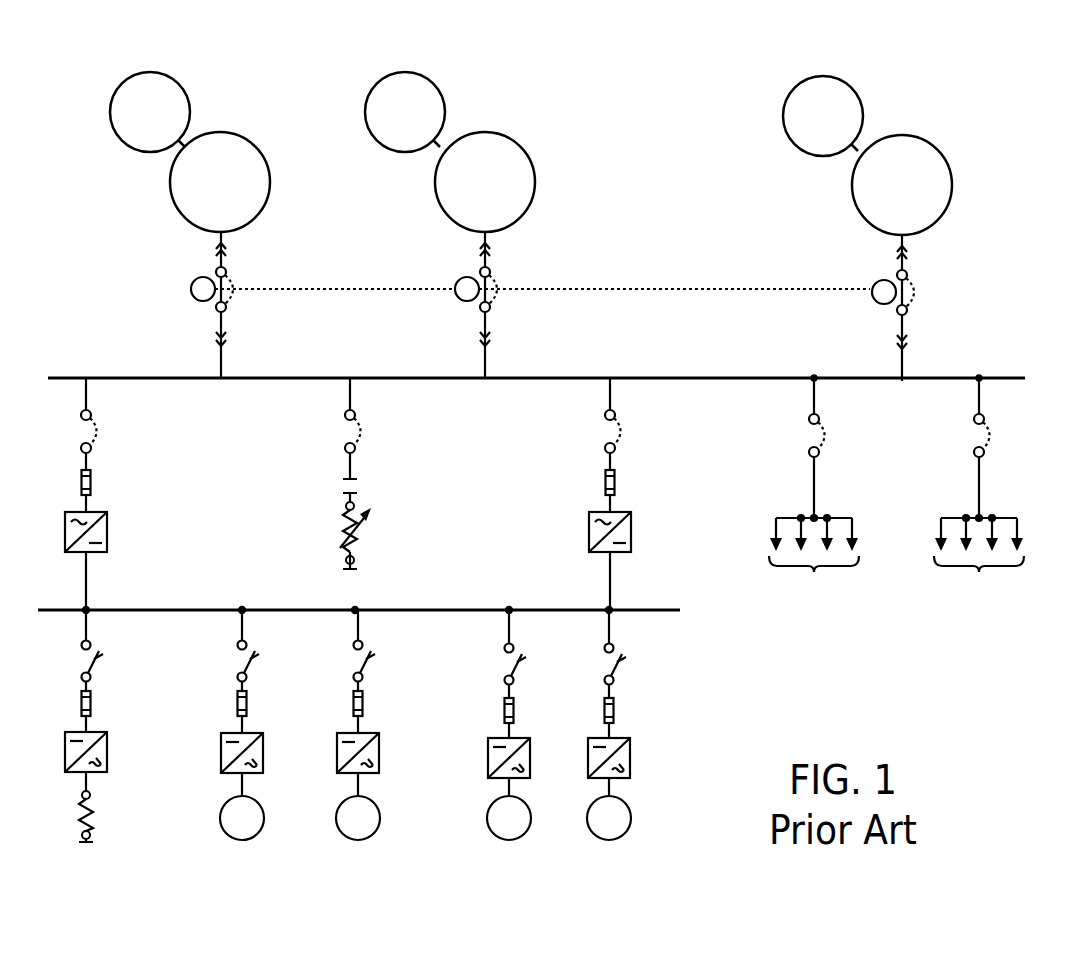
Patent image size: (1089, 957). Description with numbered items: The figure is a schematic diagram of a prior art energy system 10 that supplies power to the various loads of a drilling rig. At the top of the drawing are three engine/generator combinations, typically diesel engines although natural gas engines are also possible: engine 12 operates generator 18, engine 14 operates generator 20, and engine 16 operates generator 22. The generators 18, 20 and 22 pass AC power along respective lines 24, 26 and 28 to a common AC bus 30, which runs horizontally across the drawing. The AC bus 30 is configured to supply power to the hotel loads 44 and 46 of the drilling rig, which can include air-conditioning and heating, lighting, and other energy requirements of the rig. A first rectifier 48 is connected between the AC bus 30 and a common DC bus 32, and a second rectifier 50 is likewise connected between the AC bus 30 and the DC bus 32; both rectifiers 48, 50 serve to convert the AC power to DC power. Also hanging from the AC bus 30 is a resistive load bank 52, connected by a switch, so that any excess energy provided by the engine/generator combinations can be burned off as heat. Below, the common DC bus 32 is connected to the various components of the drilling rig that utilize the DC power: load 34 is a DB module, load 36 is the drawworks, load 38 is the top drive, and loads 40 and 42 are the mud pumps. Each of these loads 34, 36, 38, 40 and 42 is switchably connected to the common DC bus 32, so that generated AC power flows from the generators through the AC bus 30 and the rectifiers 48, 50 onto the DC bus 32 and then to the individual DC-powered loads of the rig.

The energy system 10 is at (727, 681).
The engine 12 is at (136, 151).
The engine 14 is at (399, 152).
The engine 16 is at (800, 152).
The generator 18 is at (257, 216).
The generator 20 is at (523, 215).
The generator 22 is at (862, 218).
The line 24 is at (218, 363).
The line 26 is at (487, 367).
The line 28 is at (900, 362).
The common AC bus 30 is at (400, 376).
The common DC bus 32 is at (414, 607).
The DB module 34 is at (94, 812).
The drawworks 36 is at (264, 810).
The top drive 38 is at (380, 812).
The mud pump 40 is at (531, 812).
The mud pump 42 is at (631, 812).
The hotel load 44 is at (776, 524).
The hotel load 46 is at (946, 516).
The first rectifier 48 is at (108, 532).
The rectifier 50 is at (632, 537).
The resistive load bank 52 is at (368, 535).